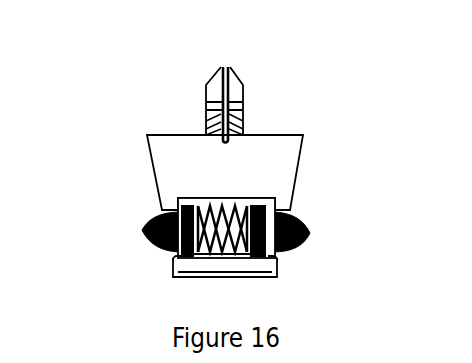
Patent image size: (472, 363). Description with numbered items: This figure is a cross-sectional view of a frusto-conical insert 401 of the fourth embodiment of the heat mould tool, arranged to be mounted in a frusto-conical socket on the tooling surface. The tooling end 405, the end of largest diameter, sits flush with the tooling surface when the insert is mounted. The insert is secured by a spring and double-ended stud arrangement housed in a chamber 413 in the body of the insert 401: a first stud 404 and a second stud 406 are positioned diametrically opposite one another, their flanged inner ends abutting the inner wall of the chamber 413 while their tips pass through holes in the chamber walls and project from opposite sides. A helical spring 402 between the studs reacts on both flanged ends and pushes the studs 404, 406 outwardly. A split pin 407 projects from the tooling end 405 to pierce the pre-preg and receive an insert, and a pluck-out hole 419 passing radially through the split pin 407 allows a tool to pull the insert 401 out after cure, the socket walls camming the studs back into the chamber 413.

The frusto-conical insert 401 is at (232, 161).
The helical spring 402 is at (203, 213).
The first stud 404 is at (143, 227).
The tooling end 405 is at (163, 137).
The second stud 406 is at (310, 235).
The split pin 407 is at (211, 72).
The chamber 413 is at (237, 252).
The pluck-out hole 419 is at (240, 92).